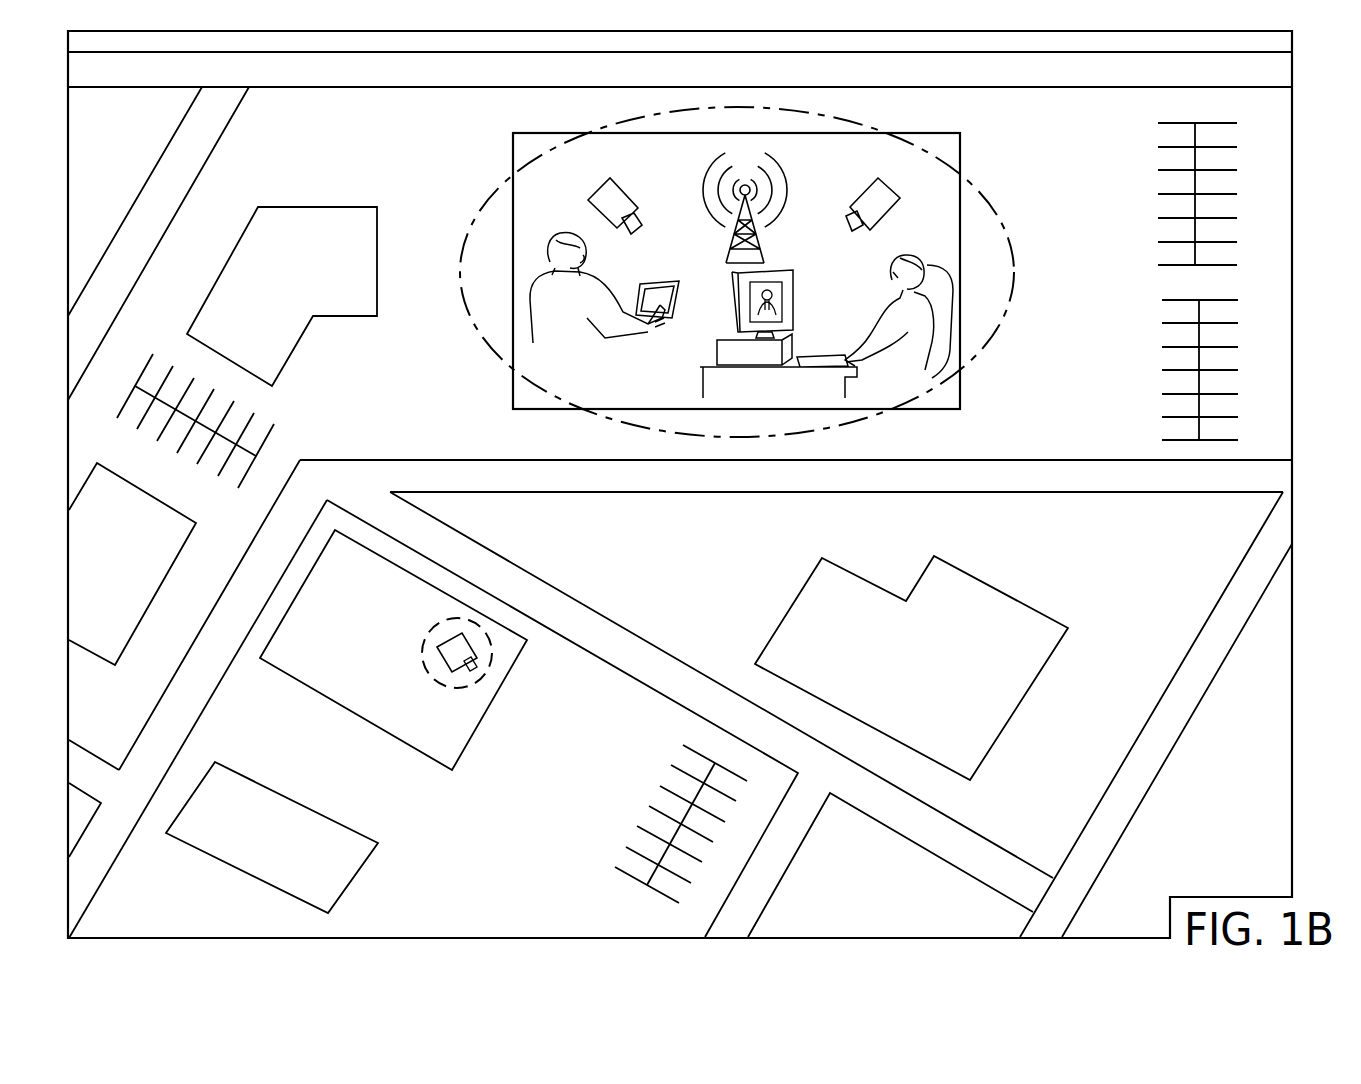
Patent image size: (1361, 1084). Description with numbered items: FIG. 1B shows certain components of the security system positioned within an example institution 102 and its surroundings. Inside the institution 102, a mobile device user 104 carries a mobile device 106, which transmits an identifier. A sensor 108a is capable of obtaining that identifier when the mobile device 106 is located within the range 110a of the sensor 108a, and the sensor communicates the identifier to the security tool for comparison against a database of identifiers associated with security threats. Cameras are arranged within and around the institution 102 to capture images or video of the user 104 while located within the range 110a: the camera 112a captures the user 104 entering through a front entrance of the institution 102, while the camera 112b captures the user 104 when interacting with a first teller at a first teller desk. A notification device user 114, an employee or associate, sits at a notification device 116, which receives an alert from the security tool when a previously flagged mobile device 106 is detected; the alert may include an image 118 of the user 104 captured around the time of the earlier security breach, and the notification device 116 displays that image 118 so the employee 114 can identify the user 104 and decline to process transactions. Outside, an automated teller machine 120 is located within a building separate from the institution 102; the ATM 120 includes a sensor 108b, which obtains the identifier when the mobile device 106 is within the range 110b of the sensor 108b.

The institution 102 is at (686, 377).
The mobile device user 104 is at (553, 308).
The mobile device 106 is at (657, 285).
The sensor 108a is at (757, 241).
The sensor 108b is at (487, 645).
The range of sensor 110a is at (993, 211).
The range of sensor 110b is at (423, 645).
The camera 112a is at (603, 193).
The camera 112b is at (883, 195).
The notification device user 114 is at (910, 328).
The notification device 116 is at (793, 306).
The image 118 is at (775, 287).
The automated teller machine 120 is at (440, 656).